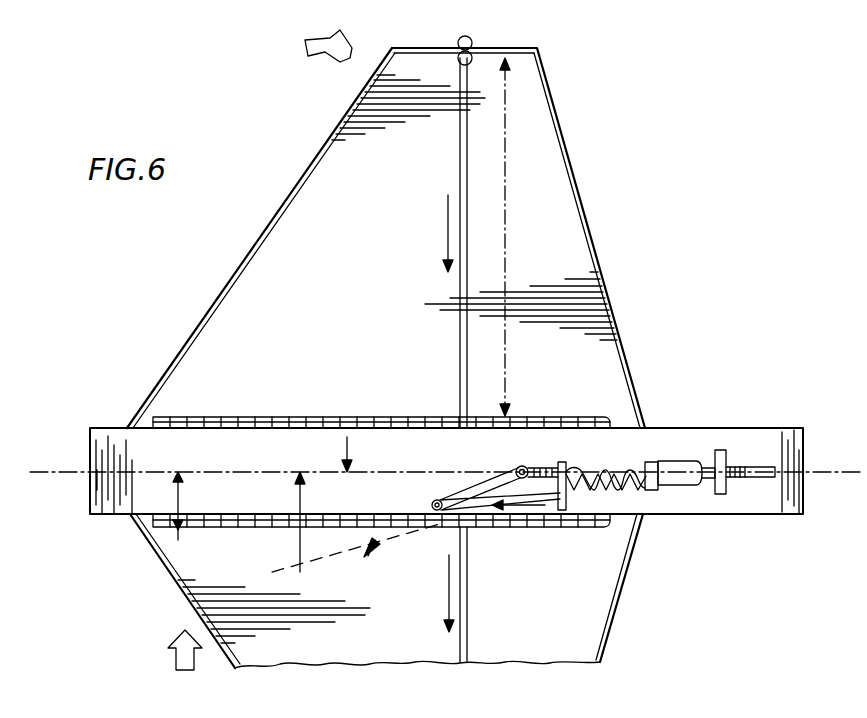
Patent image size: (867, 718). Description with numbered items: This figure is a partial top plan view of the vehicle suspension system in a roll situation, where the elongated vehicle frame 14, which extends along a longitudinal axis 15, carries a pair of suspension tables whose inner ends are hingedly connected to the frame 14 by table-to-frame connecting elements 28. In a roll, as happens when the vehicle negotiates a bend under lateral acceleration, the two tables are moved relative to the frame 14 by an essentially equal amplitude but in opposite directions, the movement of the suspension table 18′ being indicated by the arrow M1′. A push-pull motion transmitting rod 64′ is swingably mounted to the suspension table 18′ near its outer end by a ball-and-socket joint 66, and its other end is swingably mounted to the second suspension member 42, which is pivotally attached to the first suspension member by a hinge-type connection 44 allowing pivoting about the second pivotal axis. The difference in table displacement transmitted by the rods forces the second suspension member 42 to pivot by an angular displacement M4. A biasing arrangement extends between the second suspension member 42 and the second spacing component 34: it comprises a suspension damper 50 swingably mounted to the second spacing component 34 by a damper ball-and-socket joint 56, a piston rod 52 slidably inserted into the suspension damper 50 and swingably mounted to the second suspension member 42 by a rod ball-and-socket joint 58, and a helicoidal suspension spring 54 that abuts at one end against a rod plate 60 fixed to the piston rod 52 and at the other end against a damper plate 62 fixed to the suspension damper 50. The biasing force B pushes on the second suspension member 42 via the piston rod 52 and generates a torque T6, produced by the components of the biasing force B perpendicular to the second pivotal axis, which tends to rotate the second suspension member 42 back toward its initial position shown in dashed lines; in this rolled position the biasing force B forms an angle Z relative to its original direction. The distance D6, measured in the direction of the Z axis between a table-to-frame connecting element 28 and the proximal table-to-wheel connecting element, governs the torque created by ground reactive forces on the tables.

The frame 14 is at (704, 430).
The longitudinal axis 15 is at (52, 472).
The suspension table 18′ is at (553, 160).
The table-to-frame connecting element 28 is at (600, 527).
The second spacing component 34 is at (728, 494).
The second suspension member 42 is at (413, 470).
The hinge-type connection 44 is at (532, 427).
The suspension damper 50 is at (680, 486).
The piston rod 52 is at (526, 465).
The helicoidal suspension spring 54 is at (628, 522).
The damper ball-and-socket joint 56 is at (720, 495).
The rod ball-and-socket joint 58 is at (437, 511).
The rod plate 60 is at (561, 512).
The damper plate 62 is at (652, 490).
The motion transmitting rod 64′ is at (460, 158).
The ball-and-socket joint 66 is at (472, 52).
The biasing force B is at (520, 516).
The distance D6 is at (505, 117).
The angular displacement M4 is at (372, 549).
The arrow M1′ is at (310, 36).
The torque T6 is at (298, 500).
The angle Z is at (176, 492).